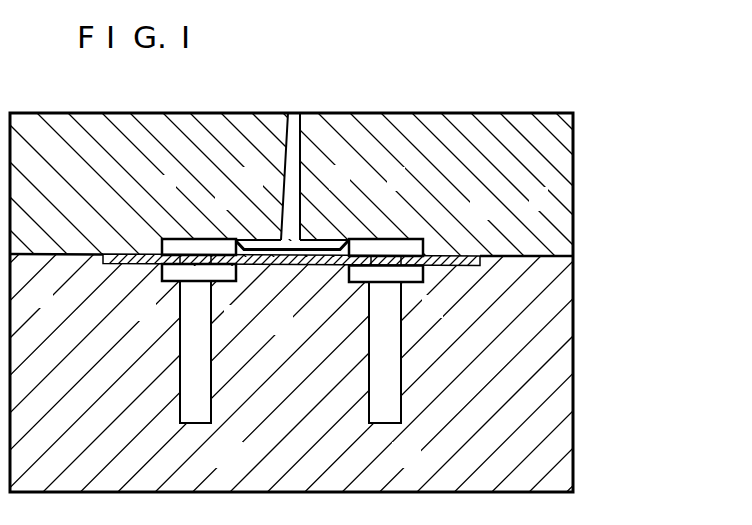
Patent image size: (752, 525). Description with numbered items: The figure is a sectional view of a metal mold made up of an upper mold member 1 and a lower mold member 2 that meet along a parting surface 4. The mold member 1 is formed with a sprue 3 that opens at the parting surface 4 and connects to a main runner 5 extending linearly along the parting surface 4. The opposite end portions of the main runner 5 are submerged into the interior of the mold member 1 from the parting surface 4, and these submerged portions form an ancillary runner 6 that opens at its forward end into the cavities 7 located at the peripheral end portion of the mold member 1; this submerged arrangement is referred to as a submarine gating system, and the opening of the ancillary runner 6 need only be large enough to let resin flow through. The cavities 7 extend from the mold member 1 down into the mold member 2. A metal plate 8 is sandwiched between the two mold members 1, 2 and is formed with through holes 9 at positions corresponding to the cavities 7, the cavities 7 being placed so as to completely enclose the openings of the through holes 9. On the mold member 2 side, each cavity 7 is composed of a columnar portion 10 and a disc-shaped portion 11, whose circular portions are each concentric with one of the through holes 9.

The mold member 1 is at (557, 158).
The mold member 2 is at (552, 287).
The sprue 3 is at (298, 136).
The parting surface 4 is at (538, 255).
The main runner 5 is at (268, 248).
The ancillary runner 6 is at (249, 247).
The cavity 7 is at (182, 247).
The metal plate 8 is at (465, 261).
The through hole 9 is at (195, 267).
The columnar portion 10 is at (197, 413).
The disc-shaped portion 11 is at (398, 245).